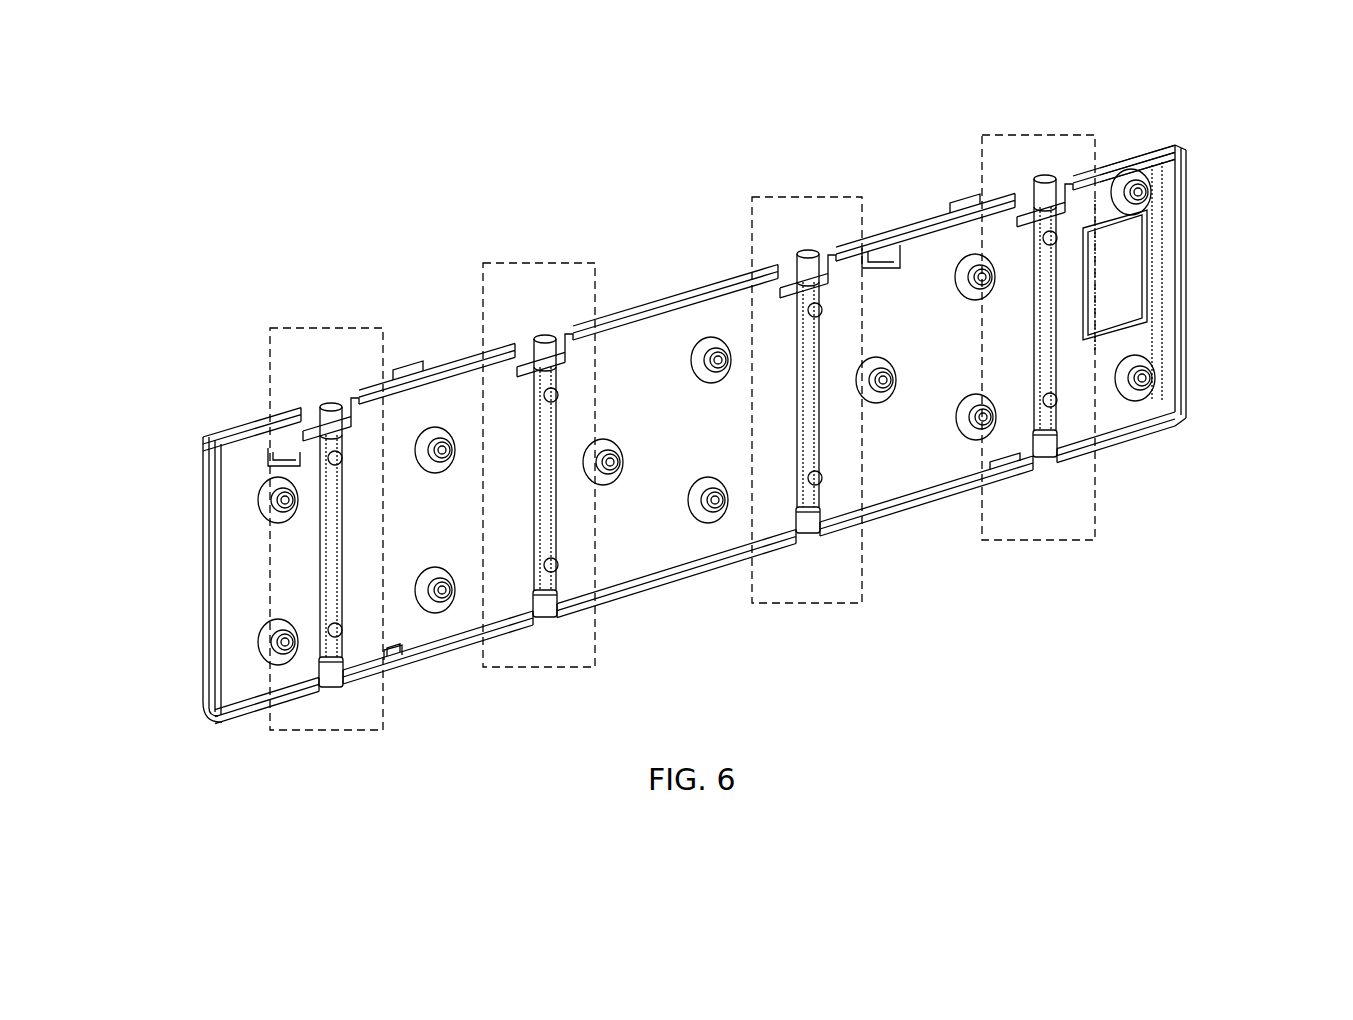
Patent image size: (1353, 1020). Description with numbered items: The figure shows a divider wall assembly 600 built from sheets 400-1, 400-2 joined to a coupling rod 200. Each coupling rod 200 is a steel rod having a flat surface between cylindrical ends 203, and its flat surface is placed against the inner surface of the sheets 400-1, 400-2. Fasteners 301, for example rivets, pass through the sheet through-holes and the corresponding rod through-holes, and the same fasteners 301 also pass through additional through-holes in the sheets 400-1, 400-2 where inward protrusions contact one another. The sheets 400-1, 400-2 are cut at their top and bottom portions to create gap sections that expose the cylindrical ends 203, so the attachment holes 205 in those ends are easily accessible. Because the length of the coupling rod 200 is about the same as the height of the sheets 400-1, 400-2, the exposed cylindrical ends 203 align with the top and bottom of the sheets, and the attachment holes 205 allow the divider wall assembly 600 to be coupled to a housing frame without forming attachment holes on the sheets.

The divider wall assembly 600 is at (220, 178).
The sheet 400-1 is at (1158, 140).
The sheet 400-2 is at (1168, 215).
The attachment hole 205 is at (331, 405).
The cylindrical ends 203 is at (330, 675).
The coupling rod 200 is at (545, 600).
The fastener 301 is at (325, 458).